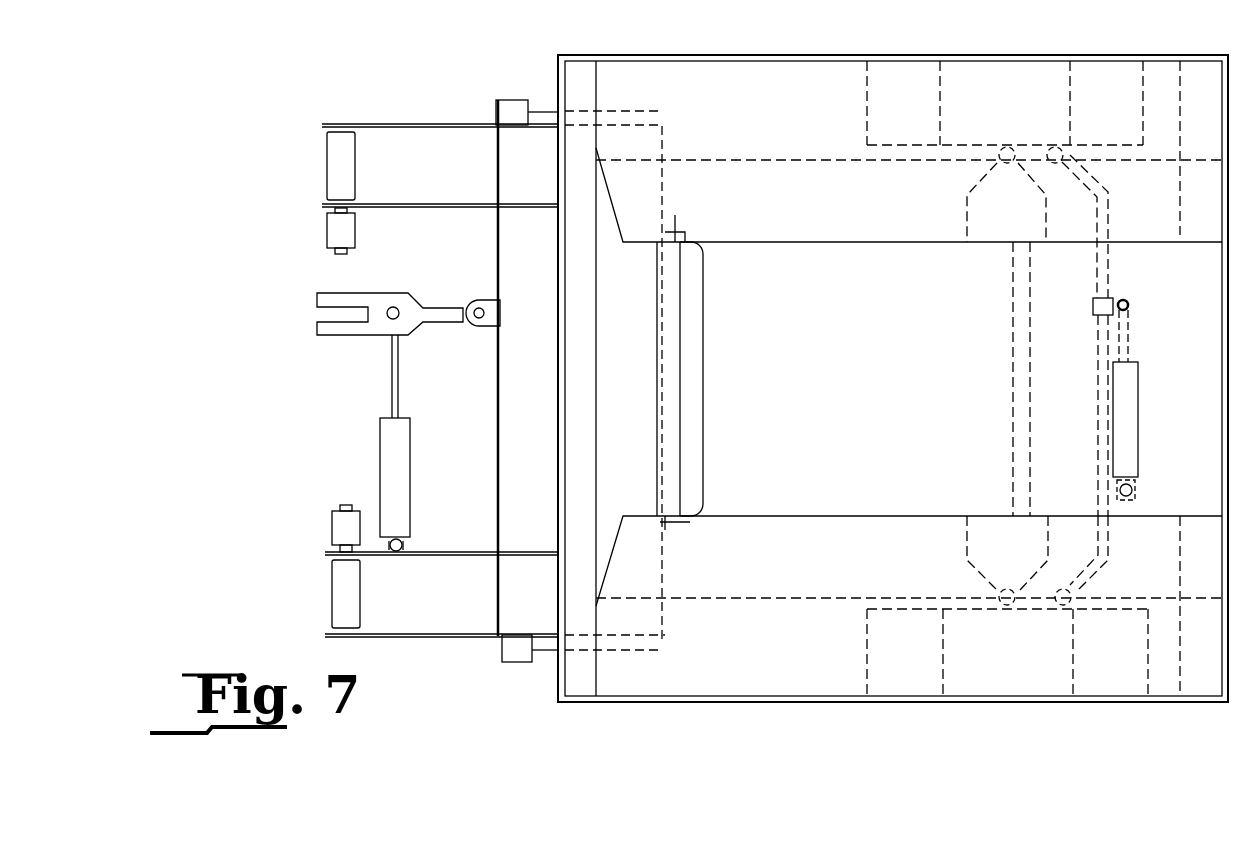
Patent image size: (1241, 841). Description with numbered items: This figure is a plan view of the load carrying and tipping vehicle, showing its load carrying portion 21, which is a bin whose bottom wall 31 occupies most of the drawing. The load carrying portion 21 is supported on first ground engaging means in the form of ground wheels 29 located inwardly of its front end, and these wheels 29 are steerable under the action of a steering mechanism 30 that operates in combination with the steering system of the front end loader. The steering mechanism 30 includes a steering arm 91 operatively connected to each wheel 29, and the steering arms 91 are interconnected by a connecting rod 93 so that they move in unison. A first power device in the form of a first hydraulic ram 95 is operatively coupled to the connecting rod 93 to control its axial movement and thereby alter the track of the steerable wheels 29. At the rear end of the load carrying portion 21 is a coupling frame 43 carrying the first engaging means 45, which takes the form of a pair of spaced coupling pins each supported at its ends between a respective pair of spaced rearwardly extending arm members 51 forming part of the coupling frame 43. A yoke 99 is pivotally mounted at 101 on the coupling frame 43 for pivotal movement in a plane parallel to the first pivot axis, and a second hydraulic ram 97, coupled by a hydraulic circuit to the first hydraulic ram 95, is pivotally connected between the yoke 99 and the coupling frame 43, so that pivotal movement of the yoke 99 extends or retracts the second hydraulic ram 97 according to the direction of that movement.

The load carrying portion 21 is at (748, 55).
The ground wheels 29 is at (908, 82).
The steering mechanism 30 is at (1155, 428).
The bottom wall 31 is at (893, 378).
The coupling frame 43 is at (452, 125).
The first engaging means 45 is at (326, 166).
The arm members 51 is at (382, 125).
The steering arm 91 is at (1097, 185).
The connecting rod 93 is at (1110, 258).
The first hydraulic ram 95 is at (1140, 380).
The second hydraulic ram 97 is at (412, 463).
The yoke 99 is at (383, 295).
The pivot mounting 101 is at (478, 305).